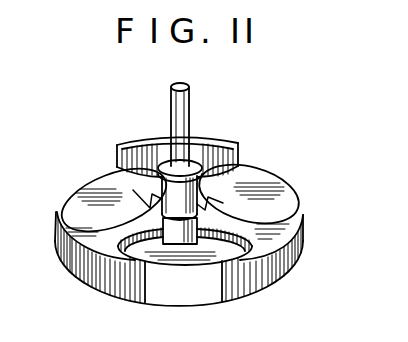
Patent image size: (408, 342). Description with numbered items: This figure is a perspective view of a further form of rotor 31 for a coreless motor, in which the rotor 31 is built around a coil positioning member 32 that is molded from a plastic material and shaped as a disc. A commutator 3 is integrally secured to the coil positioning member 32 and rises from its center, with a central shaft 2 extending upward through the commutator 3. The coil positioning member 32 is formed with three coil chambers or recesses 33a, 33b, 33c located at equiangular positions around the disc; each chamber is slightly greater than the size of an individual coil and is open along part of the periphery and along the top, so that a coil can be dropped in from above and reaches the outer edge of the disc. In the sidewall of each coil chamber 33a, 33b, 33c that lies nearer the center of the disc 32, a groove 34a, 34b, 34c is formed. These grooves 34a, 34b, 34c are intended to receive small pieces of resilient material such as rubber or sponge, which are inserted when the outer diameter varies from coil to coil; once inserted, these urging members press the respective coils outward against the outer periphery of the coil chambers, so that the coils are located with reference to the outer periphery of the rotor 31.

The shaft 2 is at (188, 101).
The commutator 3 is at (158, 189).
The rotor 31 is at (247, 124).
The coil positioning member 32 is at (296, 227).
The coil chamber 33a is at (276, 197).
The coil chamber 33b is at (208, 278).
The coil chamber 33c is at (82, 196).
The groove 34a is at (223, 188).
The groove 34b is at (173, 234).
The groove 34c is at (113, 200).